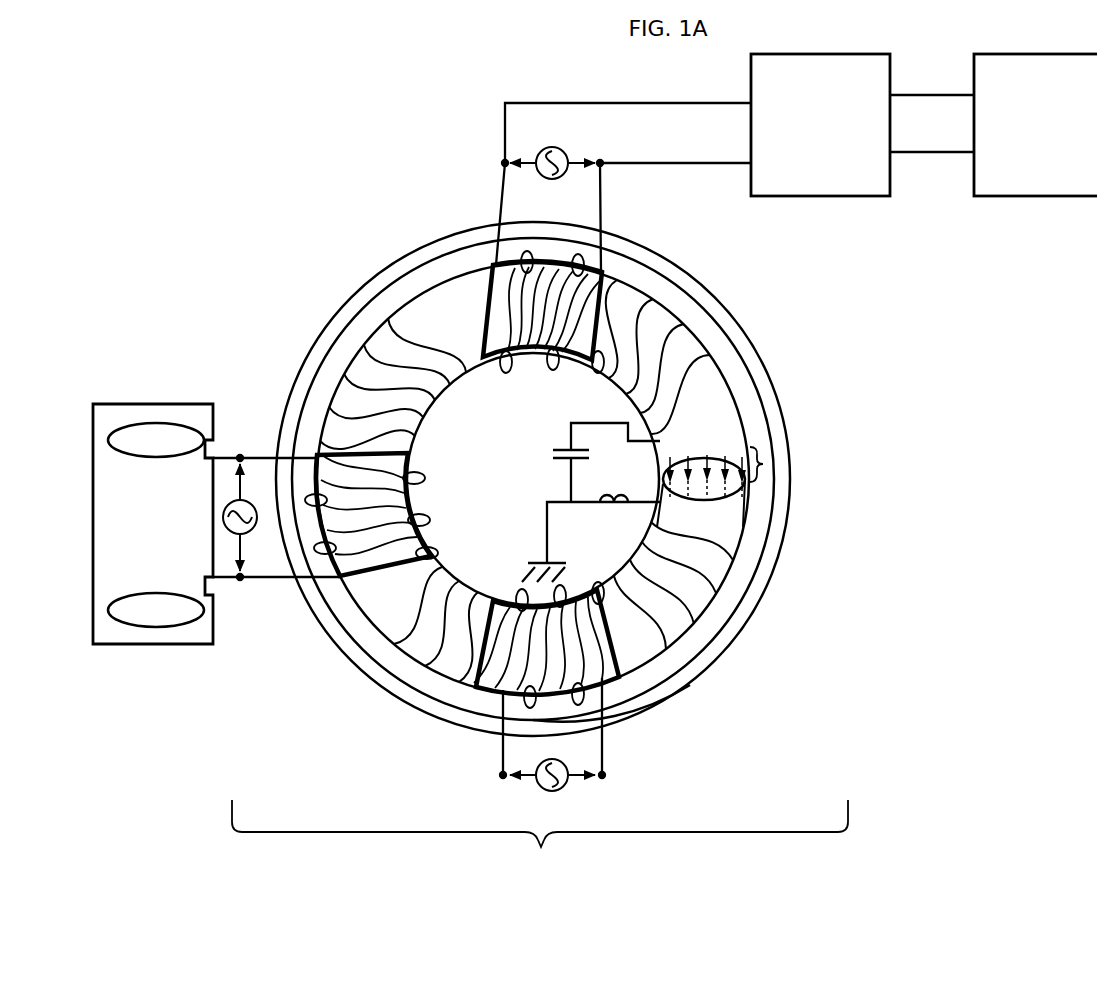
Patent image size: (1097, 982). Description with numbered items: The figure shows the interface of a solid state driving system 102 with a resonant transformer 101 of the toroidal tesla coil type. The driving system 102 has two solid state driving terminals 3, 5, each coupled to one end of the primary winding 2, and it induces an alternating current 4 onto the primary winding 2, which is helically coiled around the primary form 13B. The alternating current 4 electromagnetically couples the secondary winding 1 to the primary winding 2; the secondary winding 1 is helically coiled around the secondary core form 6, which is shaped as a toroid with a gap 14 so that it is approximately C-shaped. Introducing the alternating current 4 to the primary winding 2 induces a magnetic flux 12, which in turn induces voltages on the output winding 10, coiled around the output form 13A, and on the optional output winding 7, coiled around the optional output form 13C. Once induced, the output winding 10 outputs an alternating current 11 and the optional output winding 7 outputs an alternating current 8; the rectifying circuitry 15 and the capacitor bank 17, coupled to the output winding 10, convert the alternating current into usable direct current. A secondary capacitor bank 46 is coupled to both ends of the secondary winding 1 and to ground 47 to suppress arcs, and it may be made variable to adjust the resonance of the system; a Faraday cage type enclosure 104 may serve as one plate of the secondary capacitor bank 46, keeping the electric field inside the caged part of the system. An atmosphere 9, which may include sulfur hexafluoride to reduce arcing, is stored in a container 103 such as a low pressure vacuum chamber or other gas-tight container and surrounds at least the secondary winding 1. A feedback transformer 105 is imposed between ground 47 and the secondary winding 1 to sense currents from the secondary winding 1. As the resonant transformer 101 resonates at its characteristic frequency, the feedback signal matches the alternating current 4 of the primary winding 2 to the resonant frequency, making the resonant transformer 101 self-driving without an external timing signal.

The secondary winding 1 is at (403, 338).
The primary winding 2 is at (301, 455).
The solid state driving terminal 3 is at (156, 440).
The alternating current 4 is at (276, 518).
The solid state driving terminal 5 is at (156, 610).
The secondary core form 6 is at (406, 631).
The optional output winding 7 is at (497, 710).
The alternating current 8 is at (553, 749).
The atmosphere 9 is at (684, 650).
The output winding 10 is at (606, 266).
The alternating current 11 is at (623, 184).
The magnetic flux 12 is at (716, 453).
The output form 13A is at (490, 260).
The primary form 13B is at (337, 450).
The optional output form 13C is at (474, 673).
The gap 14 is at (772, 461).
The rectifying circuitry 15 is at (862, 125).
The capacitor bank 17 is at (1035, 125).
The secondary capacitor bank 46 is at (591, 462).
The ground 47 is at (533, 542).
The resonant transformer 101 is at (540, 844).
The solid state driving system 102 is at (153, 524).
The container 103 is at (654, 696).
The Faraday cage type enclosure 104 is at (750, 630).
The transformer 105 is at (615, 516).